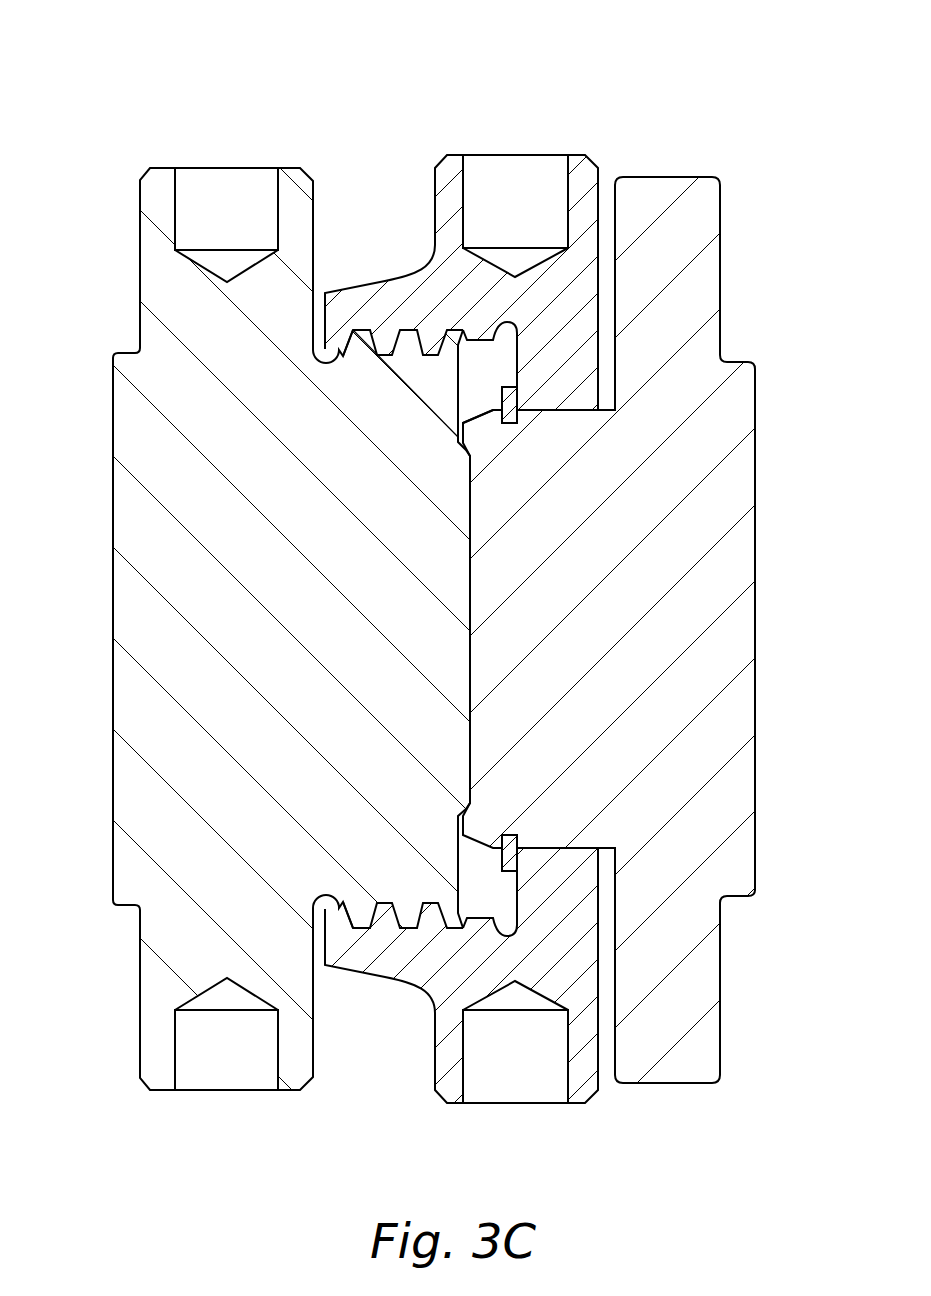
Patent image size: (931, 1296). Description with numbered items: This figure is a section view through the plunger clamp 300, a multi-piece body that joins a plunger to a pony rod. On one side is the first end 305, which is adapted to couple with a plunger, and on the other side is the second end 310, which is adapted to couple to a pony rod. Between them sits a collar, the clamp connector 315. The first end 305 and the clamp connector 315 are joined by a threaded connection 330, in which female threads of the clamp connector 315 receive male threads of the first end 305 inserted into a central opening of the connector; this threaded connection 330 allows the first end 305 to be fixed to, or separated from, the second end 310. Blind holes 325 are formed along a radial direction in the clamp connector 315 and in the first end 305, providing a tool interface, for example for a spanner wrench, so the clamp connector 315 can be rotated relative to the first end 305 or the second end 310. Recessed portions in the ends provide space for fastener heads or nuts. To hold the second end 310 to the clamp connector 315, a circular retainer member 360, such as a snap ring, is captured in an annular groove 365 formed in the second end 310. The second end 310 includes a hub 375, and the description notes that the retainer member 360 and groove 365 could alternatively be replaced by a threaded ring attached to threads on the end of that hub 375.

The plunger clamp 300 is at (134, 50).
The first end 305 is at (112, 599).
The second end 310 is at (757, 604).
The clamp connector 315 is at (435, 206).
The blind holes 325 is at (213, 183).
The threaded connection 330 is at (404, 381).
The circular retainer member 360 is at (501, 397).
The annular groove 365 is at (522, 414).
The hub 375 is at (550, 852).